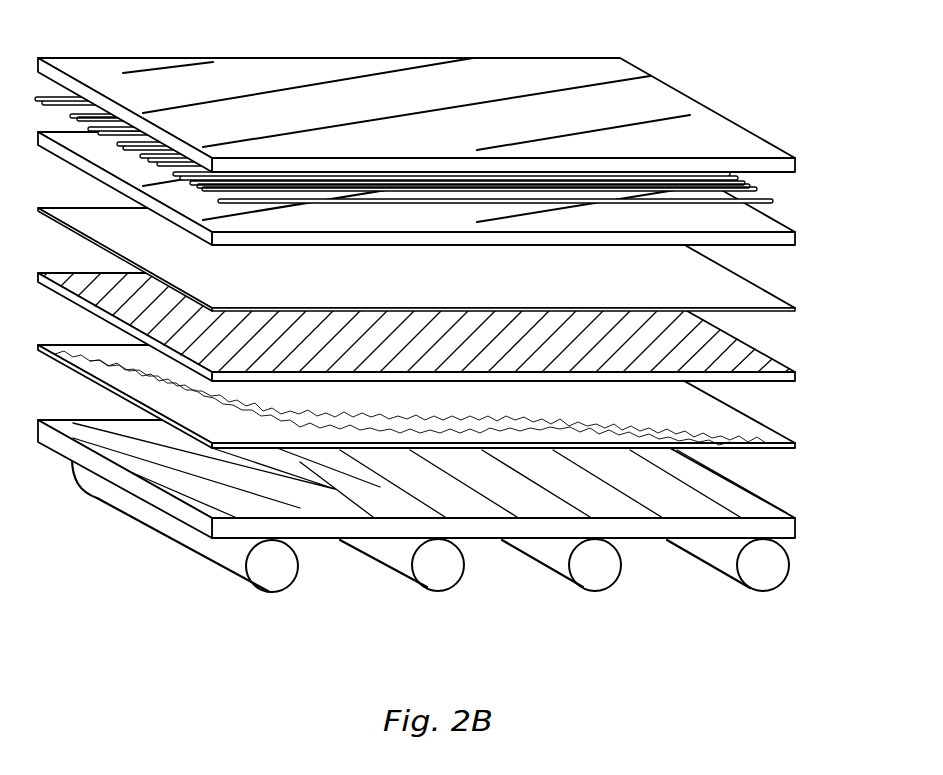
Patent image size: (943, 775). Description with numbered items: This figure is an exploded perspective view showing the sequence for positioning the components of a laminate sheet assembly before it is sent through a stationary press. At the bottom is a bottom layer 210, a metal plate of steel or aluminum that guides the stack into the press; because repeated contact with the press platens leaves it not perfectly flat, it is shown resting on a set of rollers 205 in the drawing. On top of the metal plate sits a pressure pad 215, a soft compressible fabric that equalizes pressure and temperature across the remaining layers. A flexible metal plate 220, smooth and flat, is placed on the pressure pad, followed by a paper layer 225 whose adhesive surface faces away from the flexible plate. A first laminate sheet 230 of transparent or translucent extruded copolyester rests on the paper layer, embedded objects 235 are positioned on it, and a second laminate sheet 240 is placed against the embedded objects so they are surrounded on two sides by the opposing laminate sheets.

The conveyor rollers 205 is at (757, 597).
The bottom layer 210 is at (740, 498).
The pressure pad 215 is at (740, 423).
The flexible metal plate 220 is at (750, 347).
The paper layer 225 is at (748, 287).
The first laminate sheet 230 is at (790, 237).
The embedded objects 235 is at (757, 190).
The second laminate sheet 240 is at (713, 140).